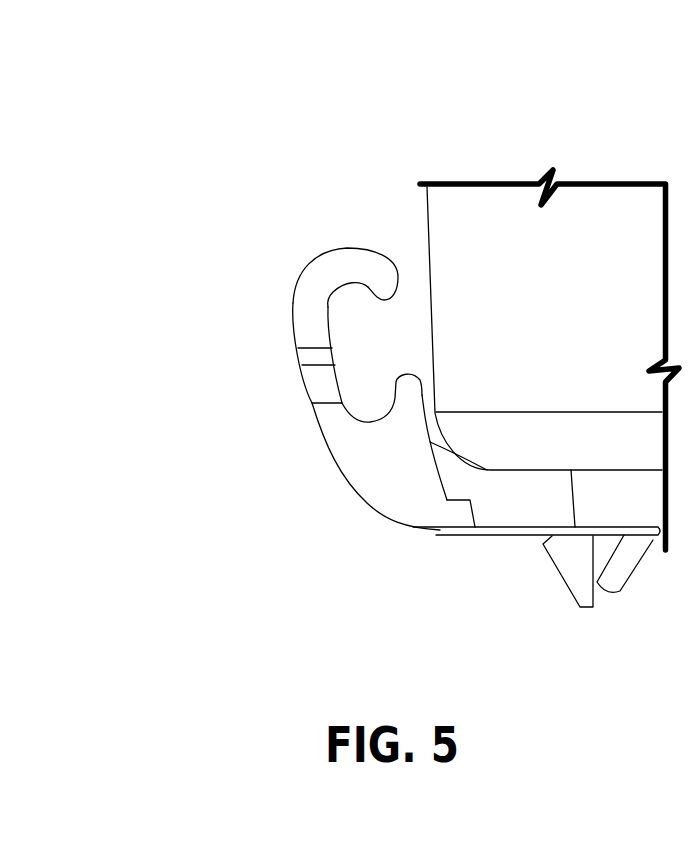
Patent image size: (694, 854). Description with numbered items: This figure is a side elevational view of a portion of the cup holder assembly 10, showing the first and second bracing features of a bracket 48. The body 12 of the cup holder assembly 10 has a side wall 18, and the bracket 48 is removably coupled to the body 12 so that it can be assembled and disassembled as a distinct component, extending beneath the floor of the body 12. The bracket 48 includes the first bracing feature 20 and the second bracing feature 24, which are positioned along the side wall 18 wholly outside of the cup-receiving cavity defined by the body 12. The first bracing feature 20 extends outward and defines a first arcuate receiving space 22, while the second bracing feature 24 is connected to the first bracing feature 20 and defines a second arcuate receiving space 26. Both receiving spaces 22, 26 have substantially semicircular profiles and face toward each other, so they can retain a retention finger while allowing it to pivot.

The cup holder assembly 10 is at (494, 133).
The body 12 is at (620, 257).
The side wall 18 is at (573, 237).
The first bracing feature 20 is at (377, 426).
The first arcuate receiving space 22 is at (370, 395).
The second bracing feature 24 is at (358, 263).
The second arcuate receiving space 26 is at (352, 297).
The bracket 48 is at (447, 504).